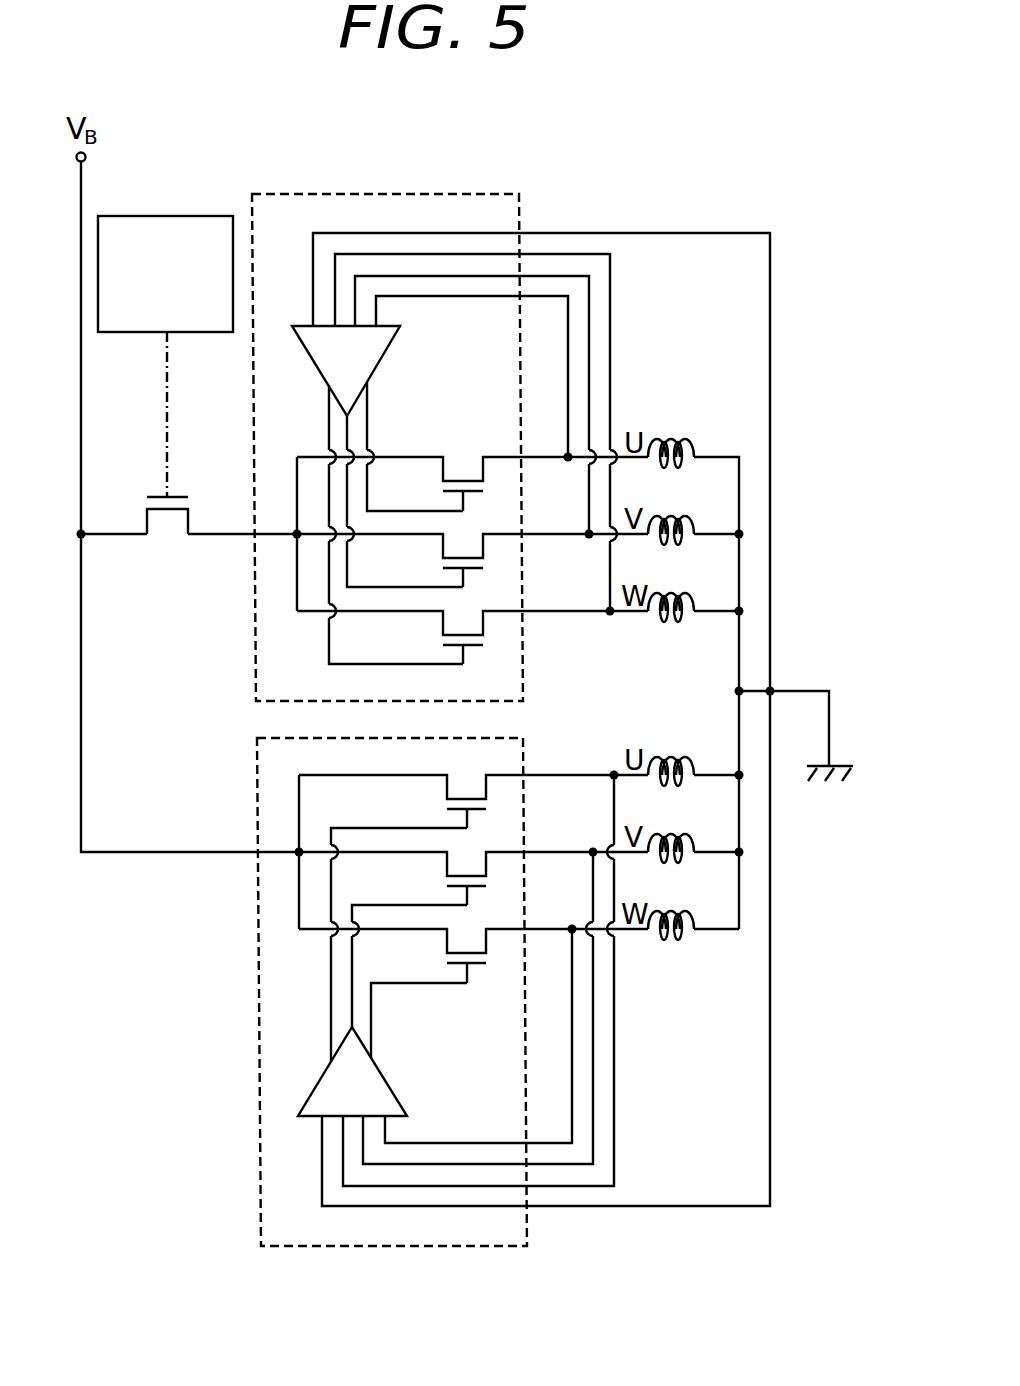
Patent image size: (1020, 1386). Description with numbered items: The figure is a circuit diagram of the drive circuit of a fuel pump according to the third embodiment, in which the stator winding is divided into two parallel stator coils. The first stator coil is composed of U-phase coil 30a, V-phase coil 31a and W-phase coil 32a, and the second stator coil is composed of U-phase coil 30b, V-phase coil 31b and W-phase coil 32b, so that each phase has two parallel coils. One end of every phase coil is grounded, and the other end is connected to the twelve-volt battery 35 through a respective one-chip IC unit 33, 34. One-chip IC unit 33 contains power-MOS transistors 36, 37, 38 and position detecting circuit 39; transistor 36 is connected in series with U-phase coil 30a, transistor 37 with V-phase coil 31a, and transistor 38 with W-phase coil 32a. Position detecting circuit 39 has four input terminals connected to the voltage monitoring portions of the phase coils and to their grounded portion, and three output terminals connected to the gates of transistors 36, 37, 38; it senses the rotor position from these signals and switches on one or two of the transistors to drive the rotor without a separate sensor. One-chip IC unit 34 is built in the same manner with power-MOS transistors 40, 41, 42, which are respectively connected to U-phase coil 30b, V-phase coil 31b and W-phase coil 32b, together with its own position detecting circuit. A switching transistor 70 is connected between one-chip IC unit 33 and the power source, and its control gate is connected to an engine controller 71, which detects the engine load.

The battery 35 is at (86, 157).
The engine controller 71 is at (200, 216).
The switching transistor 70 is at (185, 527).
The one-chip IC unit 33 is at (448, 193).
The one-chip IC unit 34 is at (468, 1246).
The position detecting circuit 39 is at (381, 362).
The power-MOS transistor 36 is at (443, 470).
The power-MOS transistor 37 is at (443, 547).
The power-MOS transistor 38 is at (443, 623).
The U-phase coil 30a is at (690, 440).
The V-phase coil 31a is at (690, 517).
The W-phase coil 32a is at (690, 594).
The U-phase coil 30b is at (690, 757).
The V-phase coil 31b is at (690, 835).
The W-phase coil 32b is at (690, 911).
The power-MOS transistor 40 is at (447, 788).
The power-MOS transistor 41 is at (447, 865).
The power-MOS transistor 42 is at (447, 941).